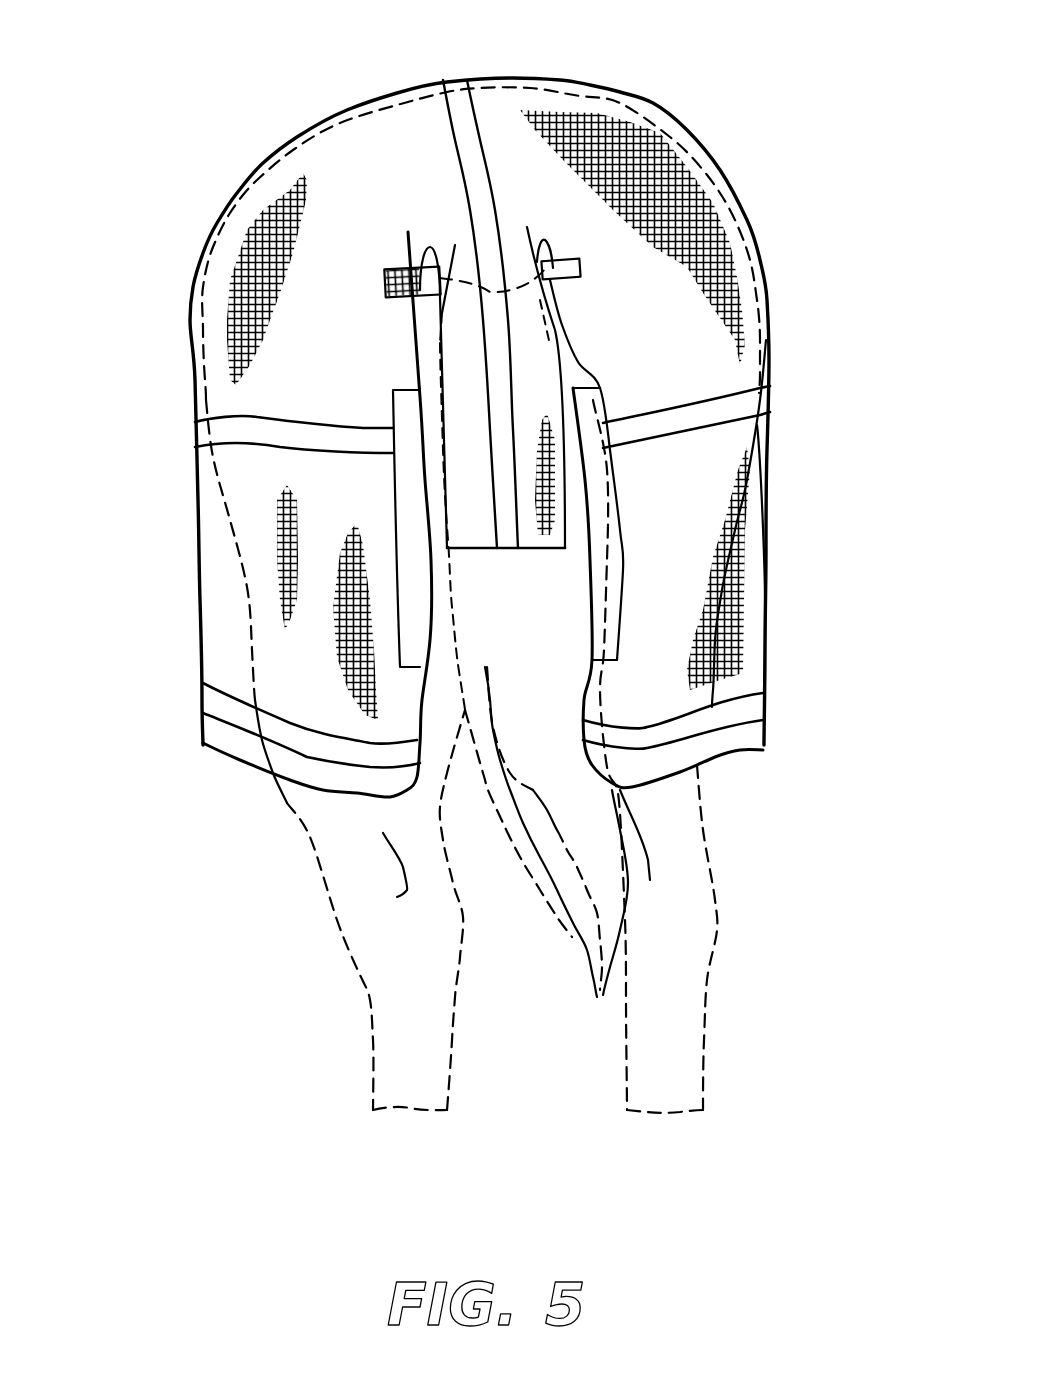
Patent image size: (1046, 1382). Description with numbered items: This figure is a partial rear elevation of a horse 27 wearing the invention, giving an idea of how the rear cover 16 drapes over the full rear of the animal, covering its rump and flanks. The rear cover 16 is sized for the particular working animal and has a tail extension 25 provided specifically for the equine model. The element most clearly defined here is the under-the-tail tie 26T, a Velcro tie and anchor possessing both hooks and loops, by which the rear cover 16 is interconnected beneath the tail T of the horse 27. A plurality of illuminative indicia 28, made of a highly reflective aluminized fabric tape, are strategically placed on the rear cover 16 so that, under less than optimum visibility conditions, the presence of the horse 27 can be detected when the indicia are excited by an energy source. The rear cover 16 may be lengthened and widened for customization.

The rear cover 16 is at (230, 607).
The tail extension 25 is at (472, 497).
The under-the-tail tie 26T is at (492, 275).
The horse 27 is at (697, 920).
The illuminative indicia 28 is at (458, 100).
The tail T is at (593, 923).